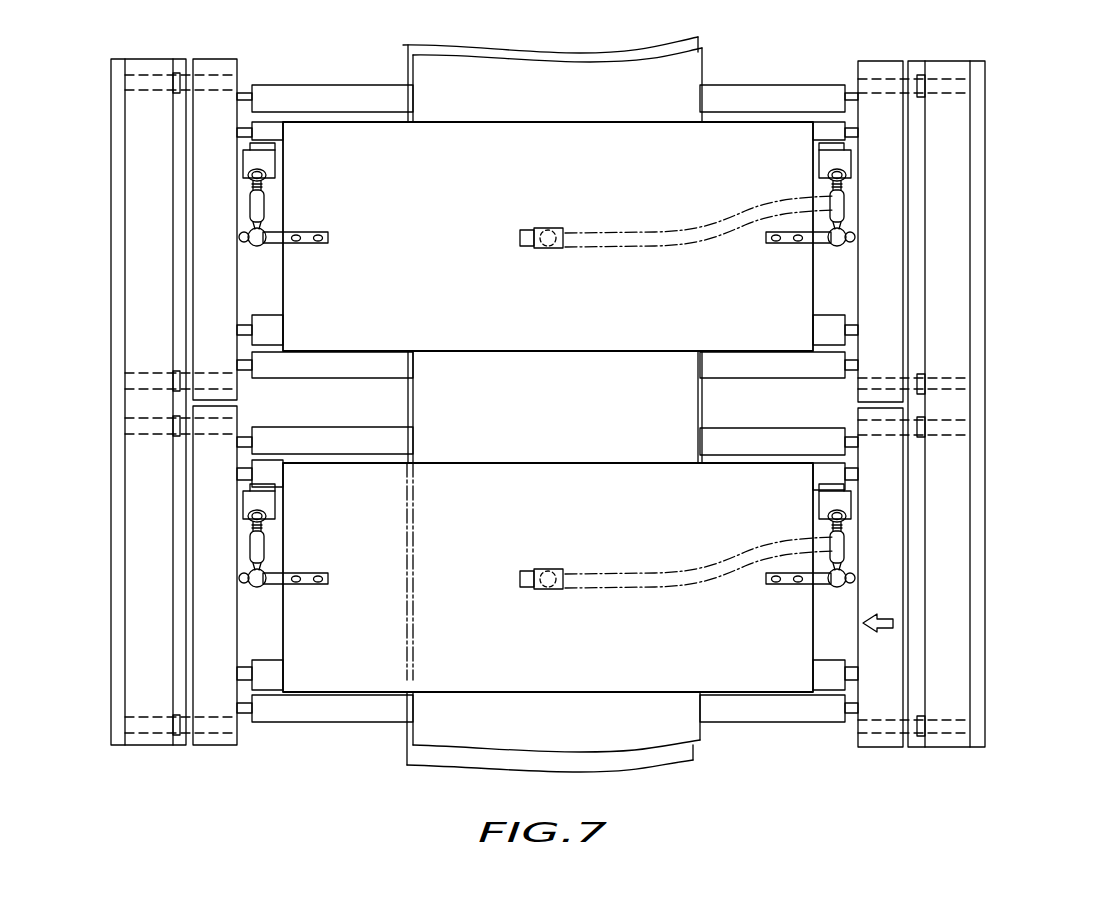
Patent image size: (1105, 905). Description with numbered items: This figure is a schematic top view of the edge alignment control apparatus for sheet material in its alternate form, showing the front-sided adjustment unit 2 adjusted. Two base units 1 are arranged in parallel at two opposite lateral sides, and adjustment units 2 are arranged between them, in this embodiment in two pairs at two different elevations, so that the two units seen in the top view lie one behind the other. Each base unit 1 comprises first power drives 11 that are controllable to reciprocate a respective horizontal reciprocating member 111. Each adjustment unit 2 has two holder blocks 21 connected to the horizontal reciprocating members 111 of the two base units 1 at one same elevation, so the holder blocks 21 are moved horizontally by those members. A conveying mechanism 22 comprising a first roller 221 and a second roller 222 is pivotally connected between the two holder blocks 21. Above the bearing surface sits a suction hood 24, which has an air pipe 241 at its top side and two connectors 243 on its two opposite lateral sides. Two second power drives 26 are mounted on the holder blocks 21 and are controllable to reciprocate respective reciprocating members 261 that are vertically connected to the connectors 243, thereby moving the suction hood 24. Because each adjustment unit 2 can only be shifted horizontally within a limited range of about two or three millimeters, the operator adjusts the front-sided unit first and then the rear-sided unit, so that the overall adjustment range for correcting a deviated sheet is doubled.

The base unit 1 is at (960, 497).
The first power drive 11 is at (963, 430).
The horizontal reciprocating member 111 is at (910, 435).
The adjustment unit 2 is at (1040, 166).
The holder block 21 is at (880, 161).
The conveying mechanism 22 is at (547, 455).
The first roller 221 is at (763, 713).
The second roller 222 is at (827, 677).
The suction hood 24 is at (800, 130).
The air pipe 241 is at (740, 205).
The connector 243 is at (318, 235).
The second power drive 26 is at (250, 157).
The reciprocating member 261 is at (256, 208).